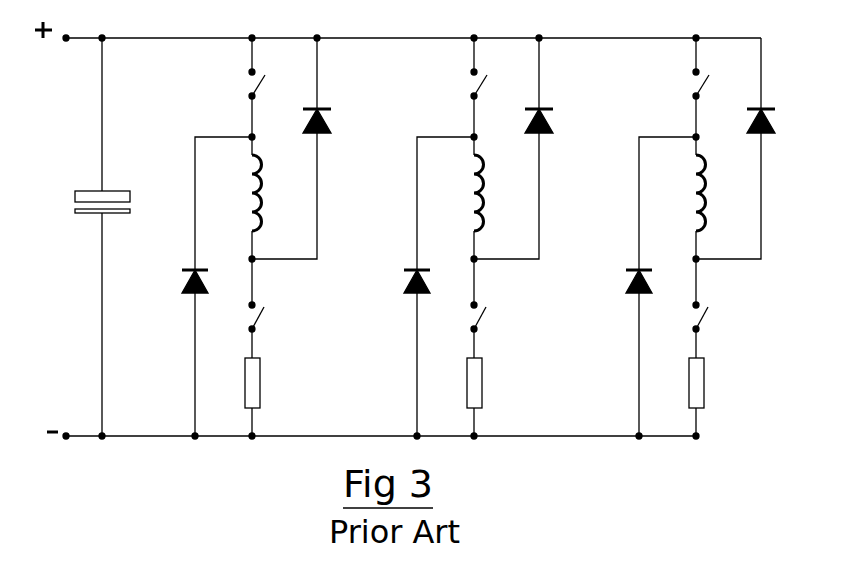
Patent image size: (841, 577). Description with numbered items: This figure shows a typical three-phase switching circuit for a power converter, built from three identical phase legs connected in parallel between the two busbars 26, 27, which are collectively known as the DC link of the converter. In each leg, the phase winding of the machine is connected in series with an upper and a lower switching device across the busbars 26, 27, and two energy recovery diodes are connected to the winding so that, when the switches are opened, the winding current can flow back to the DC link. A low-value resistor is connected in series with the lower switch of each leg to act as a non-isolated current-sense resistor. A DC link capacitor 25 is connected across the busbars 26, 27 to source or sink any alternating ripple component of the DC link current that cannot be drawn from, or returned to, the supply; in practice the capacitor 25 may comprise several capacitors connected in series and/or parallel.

The DC link capacitor 25 is at (72, 202).
The busbar 26 is at (168, 40).
The busbar 27 is at (153, 437).